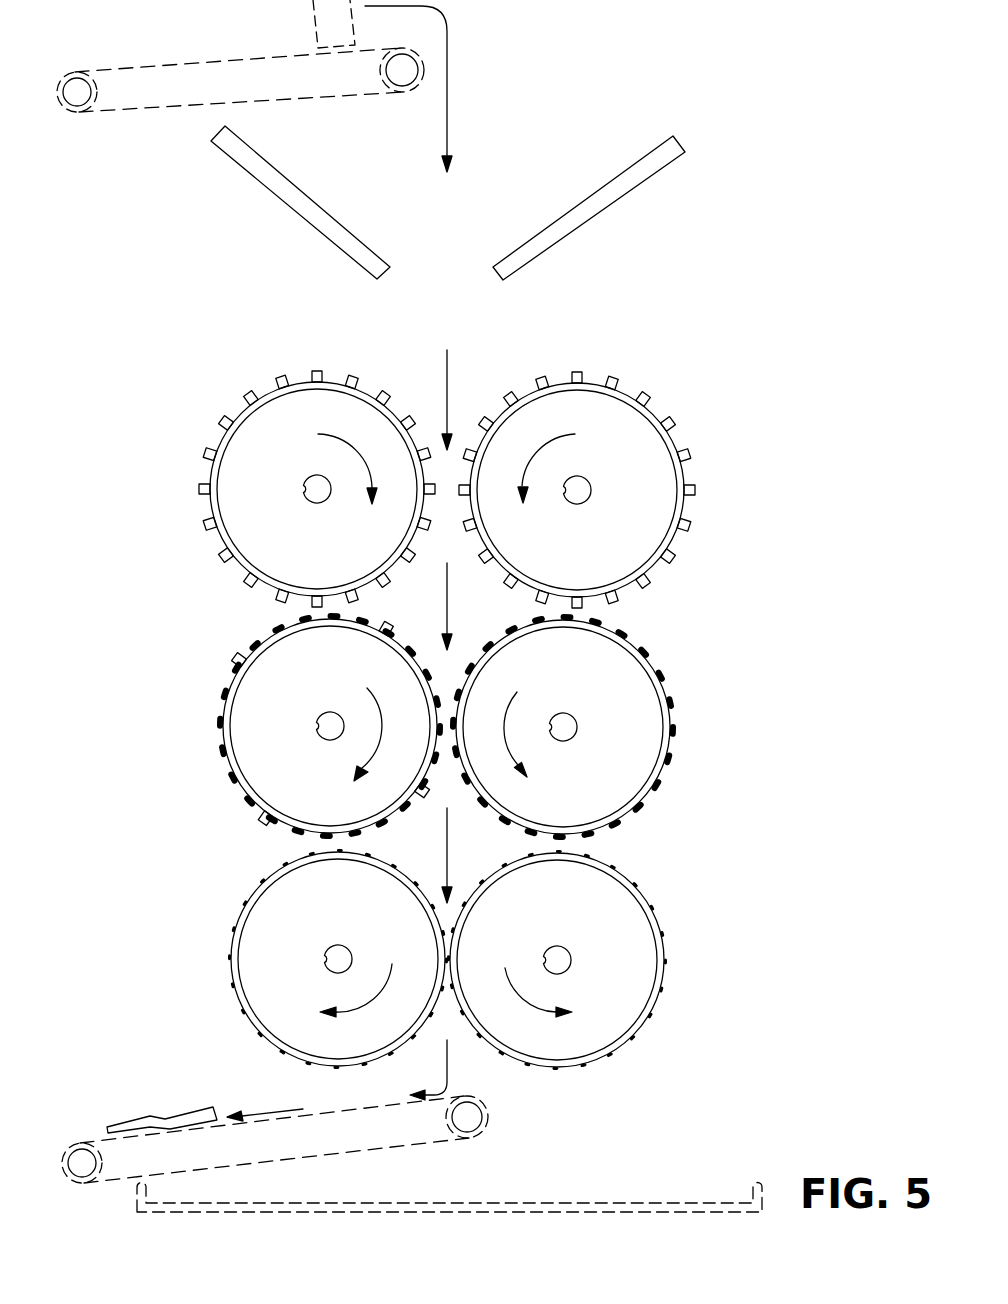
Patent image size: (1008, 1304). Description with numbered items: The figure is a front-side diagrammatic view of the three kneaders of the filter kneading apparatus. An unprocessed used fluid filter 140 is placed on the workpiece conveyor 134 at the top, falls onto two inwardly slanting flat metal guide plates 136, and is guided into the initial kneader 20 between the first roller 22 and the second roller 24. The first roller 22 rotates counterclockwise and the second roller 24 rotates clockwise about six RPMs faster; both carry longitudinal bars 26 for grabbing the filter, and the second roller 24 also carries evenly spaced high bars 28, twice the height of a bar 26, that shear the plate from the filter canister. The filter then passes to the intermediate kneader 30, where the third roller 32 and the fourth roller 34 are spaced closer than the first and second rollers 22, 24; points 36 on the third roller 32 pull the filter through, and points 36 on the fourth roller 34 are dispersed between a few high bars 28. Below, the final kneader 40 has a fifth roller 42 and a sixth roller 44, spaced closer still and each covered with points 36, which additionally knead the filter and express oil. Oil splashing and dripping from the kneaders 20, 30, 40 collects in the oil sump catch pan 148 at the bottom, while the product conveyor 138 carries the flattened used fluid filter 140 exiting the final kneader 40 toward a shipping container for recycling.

The initial kneader 20 is at (504, 489).
The first roller 22 is at (727, 496).
The second roller 24 is at (245, 450).
The bar 26 is at (260, 393).
The high bar 28 is at (198, 488).
The intermediate kneader 30 is at (516, 726).
The third roller 32 is at (625, 705).
The fourth roller 34 is at (248, 725).
The points 36 is at (227, 687).
The final kneader 40 is at (510, 959).
The fifth roller 42 is at (620, 940).
The sixth roller 44 is at (268, 928).
The workpiece conveyor 134 is at (120, 108).
The guide plates 136 is at (273, 195).
The product conveyor 138 is at (100, 1142).
The used fluid filter 140 is at (313, 20).
The oil sump catch pan 148 is at (637, 1200).